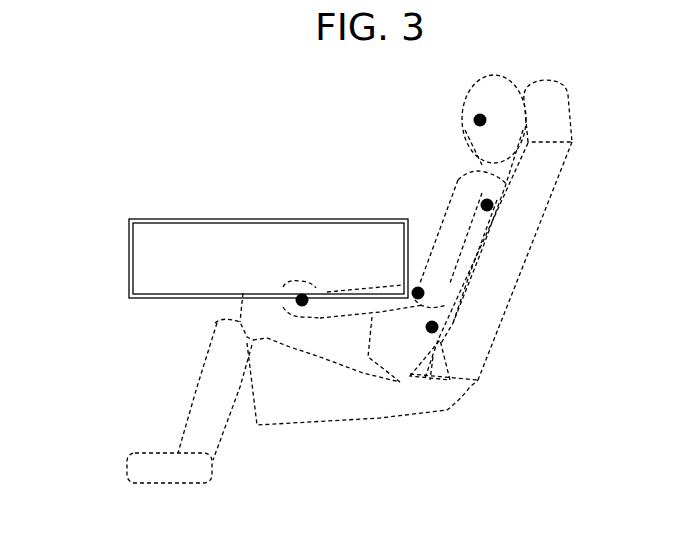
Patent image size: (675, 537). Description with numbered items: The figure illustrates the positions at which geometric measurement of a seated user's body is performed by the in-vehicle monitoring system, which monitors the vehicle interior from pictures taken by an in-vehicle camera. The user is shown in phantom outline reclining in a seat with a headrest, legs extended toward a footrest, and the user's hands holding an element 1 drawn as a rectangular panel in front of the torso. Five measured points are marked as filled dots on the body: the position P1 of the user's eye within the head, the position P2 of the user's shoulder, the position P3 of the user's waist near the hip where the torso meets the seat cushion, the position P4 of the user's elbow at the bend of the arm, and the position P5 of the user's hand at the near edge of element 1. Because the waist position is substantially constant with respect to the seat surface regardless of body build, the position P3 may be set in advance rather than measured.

The display device 1 is at (236, 230).
The position of the user's eye P1 is at (480, 120).
The position of the user's shoulder P2 is at (487, 205).
The position of the user's waist P3 is at (437, 328).
The position of the user's elbow P4 is at (425, 293).
The position of the user's hand P5 is at (298, 302).